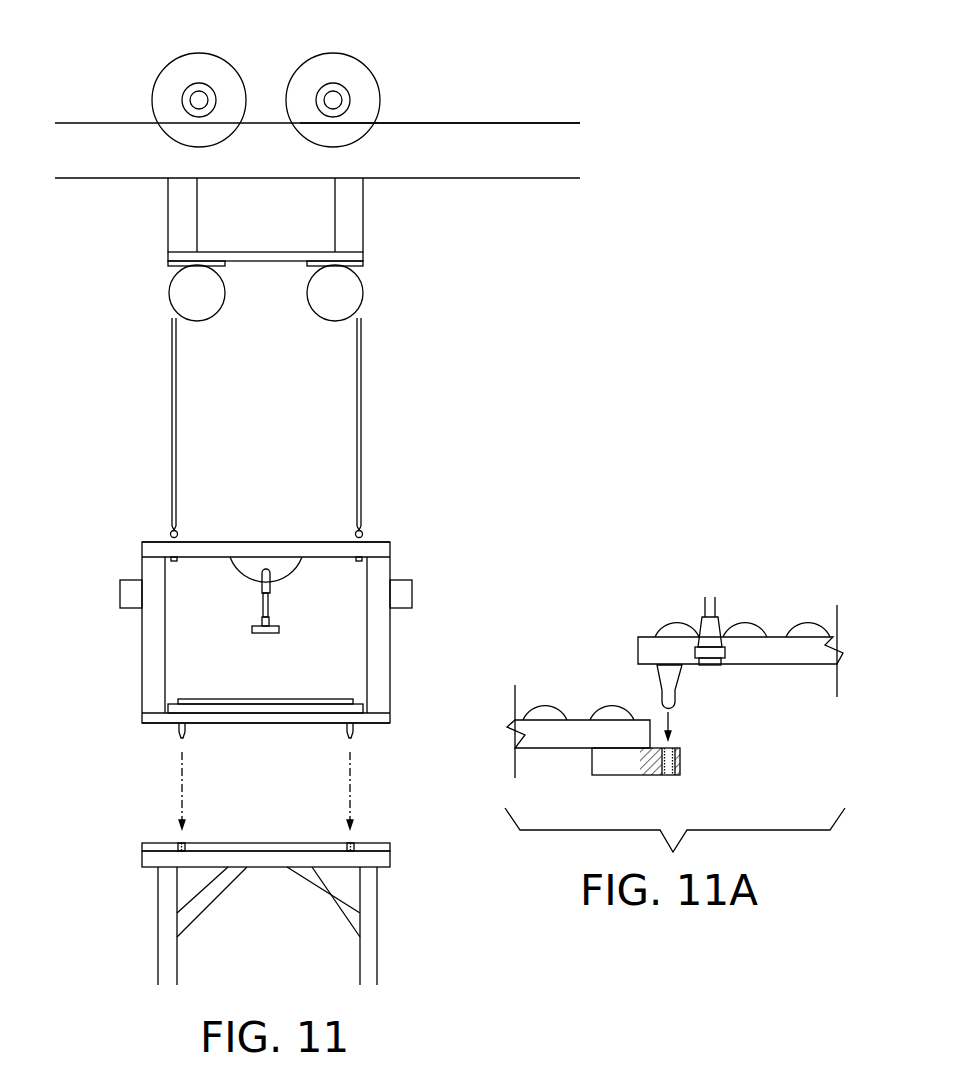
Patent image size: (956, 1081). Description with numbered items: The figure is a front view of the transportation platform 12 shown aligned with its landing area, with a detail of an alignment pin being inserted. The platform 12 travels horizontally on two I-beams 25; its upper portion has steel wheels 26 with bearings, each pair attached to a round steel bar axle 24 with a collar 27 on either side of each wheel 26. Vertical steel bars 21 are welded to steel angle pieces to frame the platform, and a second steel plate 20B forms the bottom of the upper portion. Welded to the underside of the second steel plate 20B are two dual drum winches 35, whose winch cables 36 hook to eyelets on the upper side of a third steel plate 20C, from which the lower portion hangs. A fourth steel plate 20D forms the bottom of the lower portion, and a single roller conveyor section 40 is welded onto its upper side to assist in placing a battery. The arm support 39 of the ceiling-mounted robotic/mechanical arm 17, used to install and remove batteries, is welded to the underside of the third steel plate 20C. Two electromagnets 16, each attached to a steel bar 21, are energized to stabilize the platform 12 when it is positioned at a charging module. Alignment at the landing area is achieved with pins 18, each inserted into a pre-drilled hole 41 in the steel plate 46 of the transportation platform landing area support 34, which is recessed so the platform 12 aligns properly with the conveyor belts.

In FIG. 11, the transportation platform 12 is at (84, 529).
In FIG. 11, the electromagnet 16 is at (412, 595).
In FIG. 11, the robotic/mechanical arm 17 is at (270, 600).
In FIG. 11, the pin 18 is at (180, 738).
In FIG. 11A, the pin 18 is at (676, 683).
In FIG. 11, the second steel plate 20B is at (168, 253).
In FIG. 11, the third steel plate 20C is at (379, 547).
In FIG. 11, the fourth steel plate 20D is at (390, 717).
In FIG. 11, the vertical steel bar 21 is at (363, 208).
In FIG. 11, the round steel bar axle 24 is at (330, 98).
In FIG. 11, the I-beam 25 is at (470, 123).
In FIG. 11, the steel wheel 26 is at (377, 88).
In FIG. 11, the collar 27 is at (190, 95).
In FIG. 11, the transportation platform landing area support 34 is at (270, 868).
In FIG. 11, the dual drum winch 35 is at (196, 293).
In FIG. 11, the winch cable 36 is at (172, 410).
In FIG. 11, the arm support 39 is at (240, 575).
In FIG. 11, the roller conveyor section 40 is at (297, 699).
In FIG. 11, the pre-drilled hole 41 is at (178, 845).
In FIG. 11A, the pre-drilled hole 41 is at (672, 752).
In FIG. 11, the steel plate 46 is at (244, 843).
In FIG. 11A, the steel plate 46 is at (608, 777).